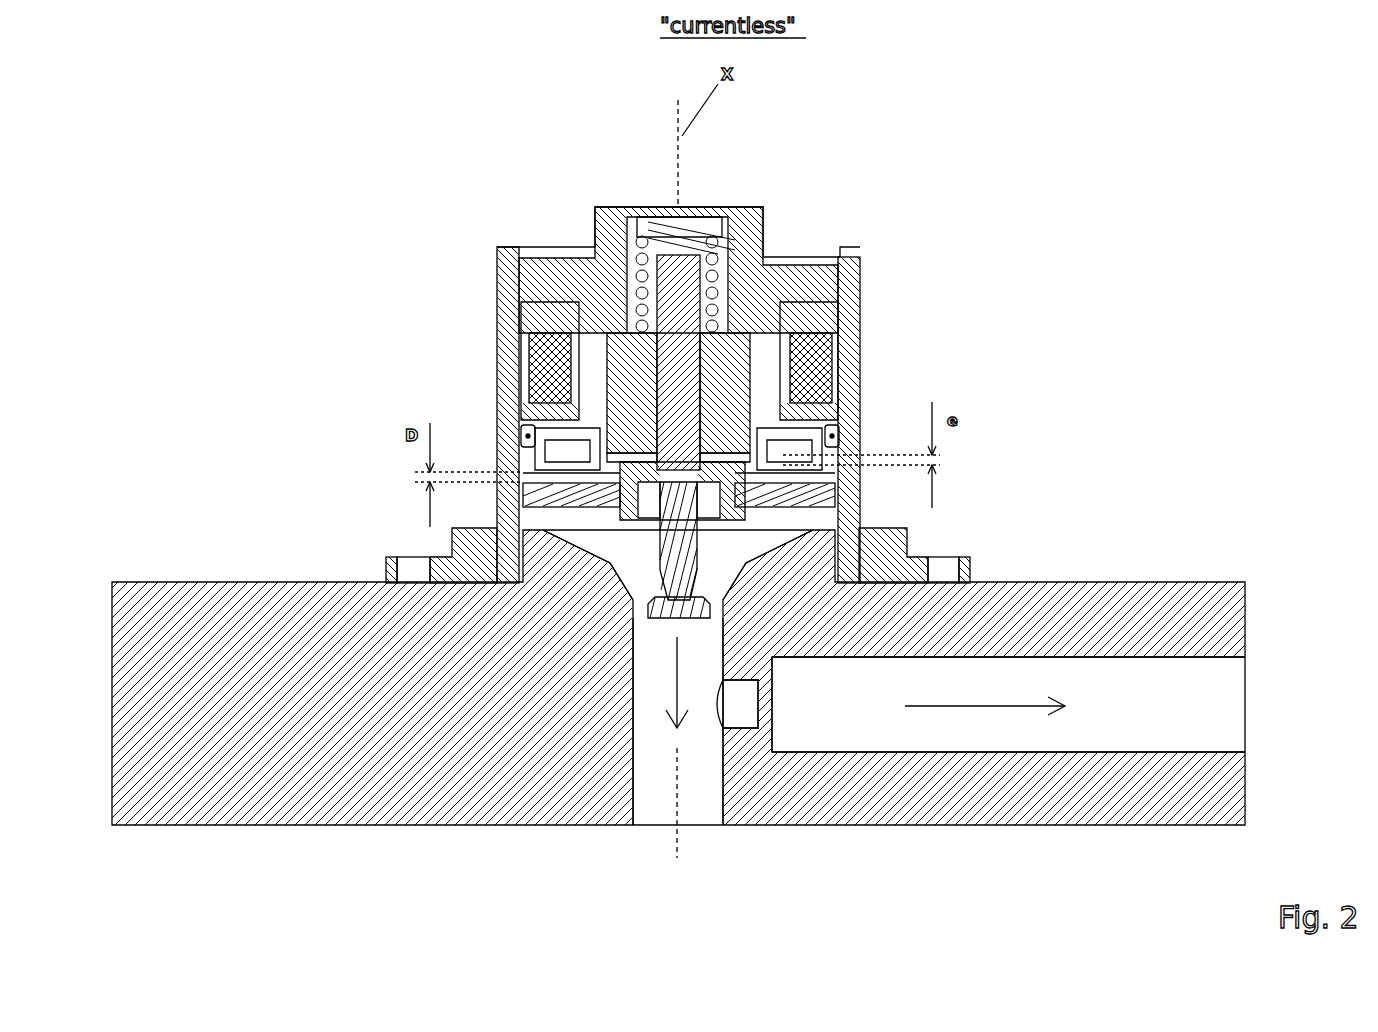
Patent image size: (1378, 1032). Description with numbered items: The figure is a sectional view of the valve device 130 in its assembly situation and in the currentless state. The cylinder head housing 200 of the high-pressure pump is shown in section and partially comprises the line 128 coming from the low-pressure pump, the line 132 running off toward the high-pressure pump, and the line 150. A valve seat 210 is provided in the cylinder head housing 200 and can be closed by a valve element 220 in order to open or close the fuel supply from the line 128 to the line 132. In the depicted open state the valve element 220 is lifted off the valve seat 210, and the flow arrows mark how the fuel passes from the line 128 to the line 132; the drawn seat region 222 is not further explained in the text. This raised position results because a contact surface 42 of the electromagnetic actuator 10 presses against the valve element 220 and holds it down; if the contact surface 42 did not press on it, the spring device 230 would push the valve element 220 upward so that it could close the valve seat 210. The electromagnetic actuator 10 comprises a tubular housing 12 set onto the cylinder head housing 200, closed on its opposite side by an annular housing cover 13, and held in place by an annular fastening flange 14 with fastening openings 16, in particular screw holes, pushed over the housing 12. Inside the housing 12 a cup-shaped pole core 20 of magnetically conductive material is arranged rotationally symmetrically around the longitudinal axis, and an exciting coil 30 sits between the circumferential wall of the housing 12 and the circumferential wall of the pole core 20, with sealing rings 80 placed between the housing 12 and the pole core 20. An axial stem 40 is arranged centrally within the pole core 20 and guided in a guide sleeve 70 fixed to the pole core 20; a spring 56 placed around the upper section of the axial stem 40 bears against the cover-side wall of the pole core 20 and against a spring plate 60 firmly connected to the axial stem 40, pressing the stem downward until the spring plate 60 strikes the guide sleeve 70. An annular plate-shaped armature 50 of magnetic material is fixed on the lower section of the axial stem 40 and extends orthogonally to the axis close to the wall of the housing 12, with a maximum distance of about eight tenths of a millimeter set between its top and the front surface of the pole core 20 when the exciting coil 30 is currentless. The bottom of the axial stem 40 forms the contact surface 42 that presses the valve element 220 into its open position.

The electromagnetic actuator 10 is at (980, 368).
The tubular housing 12 is at (512, 355).
The housing cover 13 is at (522, 260).
The annular fastening flange 14 is at (455, 565).
The fastening openings 16 is at (413, 568).
The cup-shaped pole core 20 is at (595, 207).
The exciting coil 30 is at (497, 283).
The axial stem 40 is at (712, 237).
The contact surface 42 is at (822, 360).
The plate-shaped armature 50 is at (817, 495).
The spring 56 is at (642, 222).
The spring plate 60 is at (710, 325).
The guide sleeve 70 is at (728, 388).
The sealing rings 80 is at (524, 437).
The line 128 is at (590, 545).
The valve device 130 is at (1238, 168).
The line 132 is at (1010, 672).
The line 150 is at (655, 772).
The cylinder head housing 200 is at (292, 765).
The valve seat 210 is at (678, 605).
The valve element 220 is at (639, 535).
The valve seat insert 222 is at (642, 612).
The spring device 230 is at (710, 508).